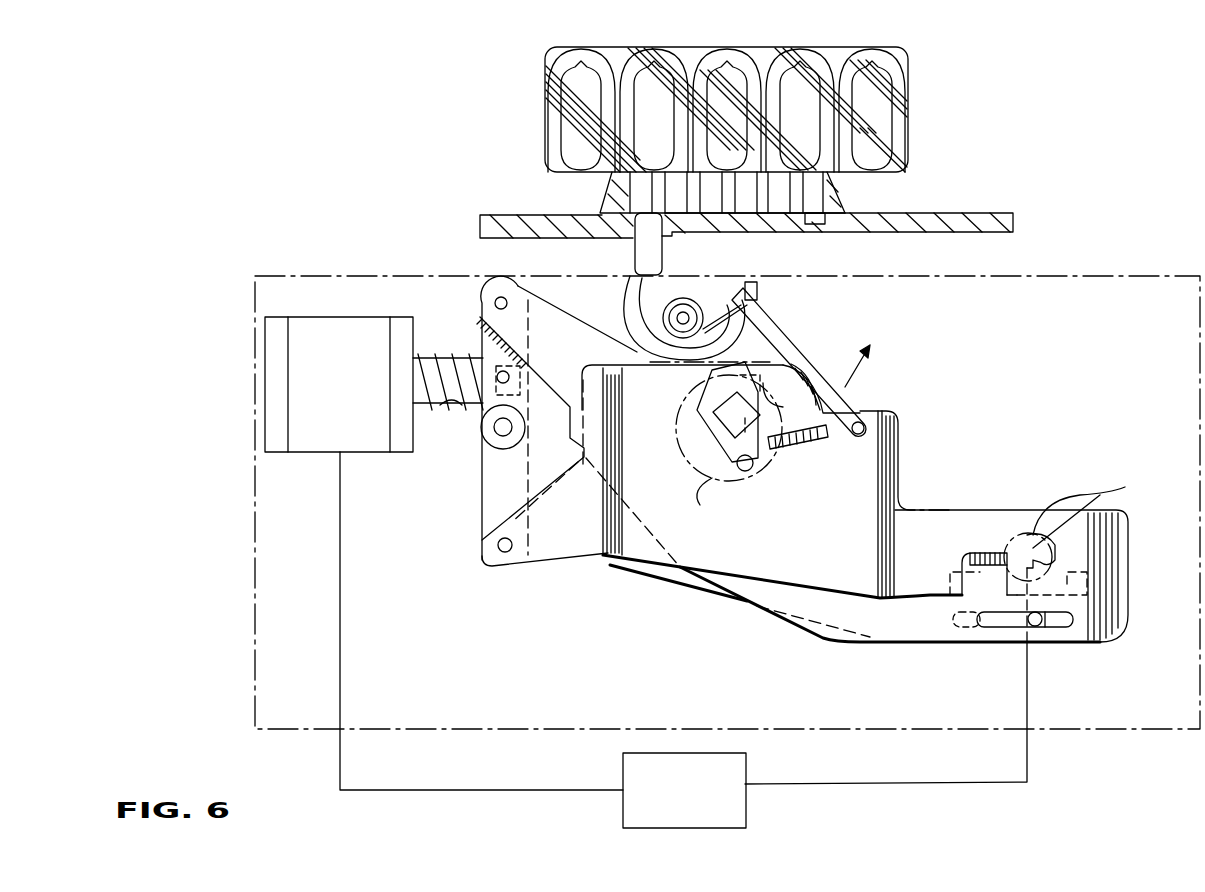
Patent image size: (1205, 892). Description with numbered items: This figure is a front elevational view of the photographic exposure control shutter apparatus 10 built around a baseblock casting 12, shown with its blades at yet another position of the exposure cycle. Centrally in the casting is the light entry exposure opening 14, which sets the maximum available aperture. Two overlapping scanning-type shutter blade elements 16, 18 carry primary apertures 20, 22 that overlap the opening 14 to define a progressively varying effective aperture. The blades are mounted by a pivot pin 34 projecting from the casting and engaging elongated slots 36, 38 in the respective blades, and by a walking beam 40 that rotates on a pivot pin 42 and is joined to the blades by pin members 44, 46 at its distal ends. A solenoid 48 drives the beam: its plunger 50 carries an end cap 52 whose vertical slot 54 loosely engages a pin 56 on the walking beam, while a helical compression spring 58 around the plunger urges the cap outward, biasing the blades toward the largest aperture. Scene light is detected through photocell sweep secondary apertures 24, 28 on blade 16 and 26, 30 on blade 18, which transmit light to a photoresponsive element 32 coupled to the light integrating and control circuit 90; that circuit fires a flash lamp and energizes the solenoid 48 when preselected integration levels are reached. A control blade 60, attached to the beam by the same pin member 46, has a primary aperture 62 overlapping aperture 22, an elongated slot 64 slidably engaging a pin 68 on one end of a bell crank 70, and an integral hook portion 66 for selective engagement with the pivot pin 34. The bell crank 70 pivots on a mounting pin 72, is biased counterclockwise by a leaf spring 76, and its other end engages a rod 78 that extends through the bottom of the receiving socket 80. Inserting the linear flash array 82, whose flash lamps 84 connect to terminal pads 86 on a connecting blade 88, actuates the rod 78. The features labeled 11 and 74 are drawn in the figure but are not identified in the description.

The photographic exposure control shutter apparatus 10 is at (975, 399).
The panel 11 is at (975, 212).
The baseblock casting 12 is at (1082, 442).
The light entry exposure opening 14 is at (700, 505).
The shutter blade element 16 is at (545, 280).
The shutter blade element 18 is at (590, 568).
The primary aperture 20 is at (682, 446).
The primary aperture 22 is at (740, 412).
The photocell sweep secondary aperture 24 is at (1000, 546).
The photocell sweep secondary aperture 26 is at (1050, 556).
The photocell sweep secondary aperture 28 is at (967, 590).
The photocell sweep secondary aperture 30 is at (1082, 578).
The photoresponsive element 32 is at (1071, 501).
The pivot pin 34 is at (1040, 628).
The elongated slot 36 is at (1000, 627).
The elongated slot 38 is at (1057, 628).
The walking beam 40 is at (482, 500).
The pivot pin 42 is at (494, 438).
The pin member 44 is at (495, 298).
The pin member 46 is at (498, 548).
The solenoid 48 is at (320, 316).
The solenoid plunger 50 is at (440, 358).
The end cap 52 is at (486, 328).
The vertical slot 54 is at (500, 412).
The pin 56 is at (533, 368).
The helical compression spring 58 is at (440, 410).
The control blade 60 is at (900, 470).
The primary aperture 62 is at (748, 471).
The elongated slot 64 is at (828, 438).
The hook portion 66 is at (1089, 501).
The pin 68 is at (866, 420).
The bell crank 70 is at (790, 333).
The mounting pin 72 is at (645, 300).
The cable loop 74 is at (660, 290).
The leaf spring 76 is at (730, 312).
The rod 78 is at (665, 244).
The receiving socket 80 is at (845, 200).
The linear flash array 82 is at (915, 145).
The flash lamps 84 is at (878, 102).
The terminal pads 86 is at (770, 215).
The connecting blade 88 is at (815, 226).
The light integrating and control circuit 90 is at (746, 765).